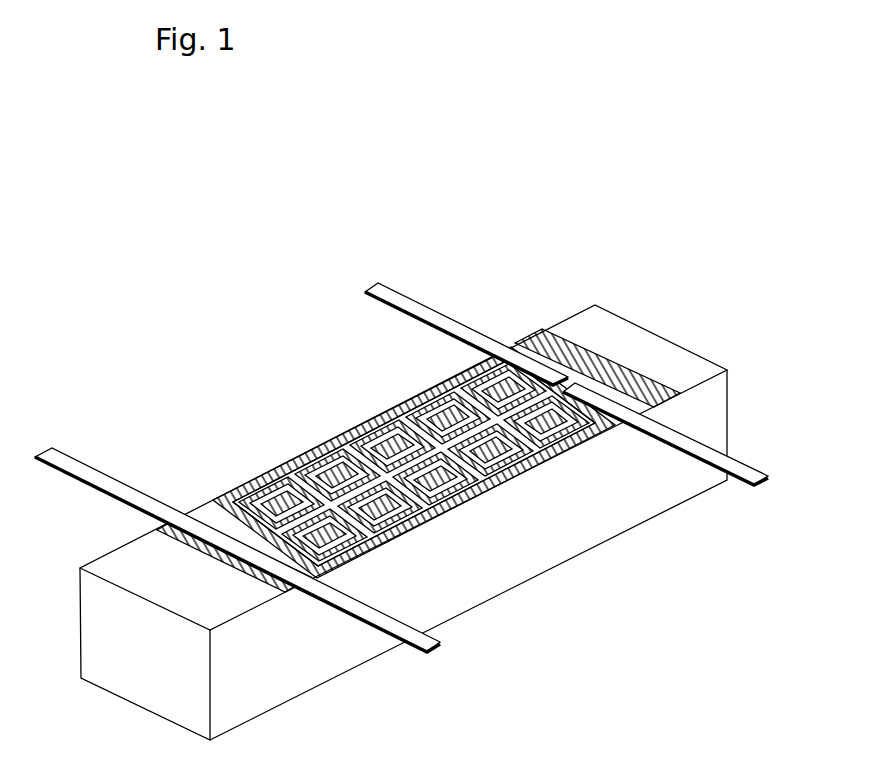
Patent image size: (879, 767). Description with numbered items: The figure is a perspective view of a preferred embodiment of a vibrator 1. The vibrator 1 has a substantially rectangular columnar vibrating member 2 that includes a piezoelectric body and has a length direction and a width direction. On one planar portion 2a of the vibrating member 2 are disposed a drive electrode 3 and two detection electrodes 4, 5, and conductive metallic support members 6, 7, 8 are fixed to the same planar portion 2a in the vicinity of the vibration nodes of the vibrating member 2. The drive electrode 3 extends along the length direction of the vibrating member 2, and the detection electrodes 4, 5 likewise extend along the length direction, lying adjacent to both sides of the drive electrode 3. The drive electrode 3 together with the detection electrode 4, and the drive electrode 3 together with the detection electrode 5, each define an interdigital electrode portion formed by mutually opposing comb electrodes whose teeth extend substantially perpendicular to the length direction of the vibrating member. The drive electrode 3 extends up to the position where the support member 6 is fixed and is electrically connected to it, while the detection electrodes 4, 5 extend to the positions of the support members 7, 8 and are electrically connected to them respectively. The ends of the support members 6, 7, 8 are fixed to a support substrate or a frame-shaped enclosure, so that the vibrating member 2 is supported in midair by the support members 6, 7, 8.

The vibrator 1 is at (142, 302).
The vibrating member 2 is at (665, 332).
The planar portion 2a is at (580, 330).
The drive electrode 3 is at (200, 508).
The detection electrode 4 is at (247, 486).
The detection electrode 5 is at (415, 535).
The support member 6 is at (105, 482).
The support member 7 is at (428, 318).
The support member 8 is at (745, 465).